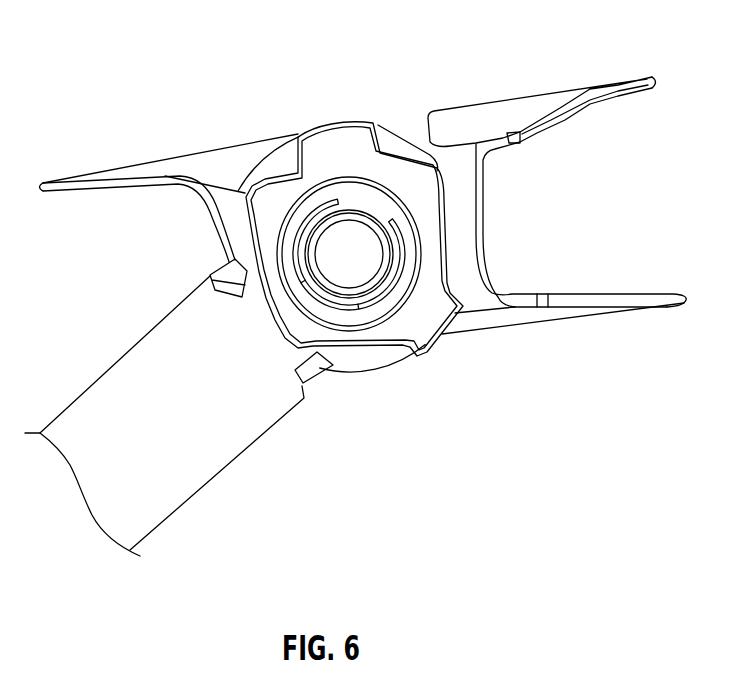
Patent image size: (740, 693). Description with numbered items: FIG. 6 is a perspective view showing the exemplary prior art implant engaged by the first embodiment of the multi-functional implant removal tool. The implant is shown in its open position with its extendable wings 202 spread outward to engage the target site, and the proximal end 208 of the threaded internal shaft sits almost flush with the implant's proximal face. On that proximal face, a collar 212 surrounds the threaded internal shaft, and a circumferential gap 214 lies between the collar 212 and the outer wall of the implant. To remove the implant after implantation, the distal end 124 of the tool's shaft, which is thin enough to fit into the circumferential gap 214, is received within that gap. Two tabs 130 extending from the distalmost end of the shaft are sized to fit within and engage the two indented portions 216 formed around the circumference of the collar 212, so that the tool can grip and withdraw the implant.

The distal end 124 is at (147, 503).
The tabs 130 is at (230, 281).
The extendable wings 202 is at (88, 178).
The proximal end of threaded internal shaft 208 is at (345, 257).
The collar 212 is at (403, 265).
The circumferential gap 214 is at (407, 247).
The indented portions 216 is at (352, 206).